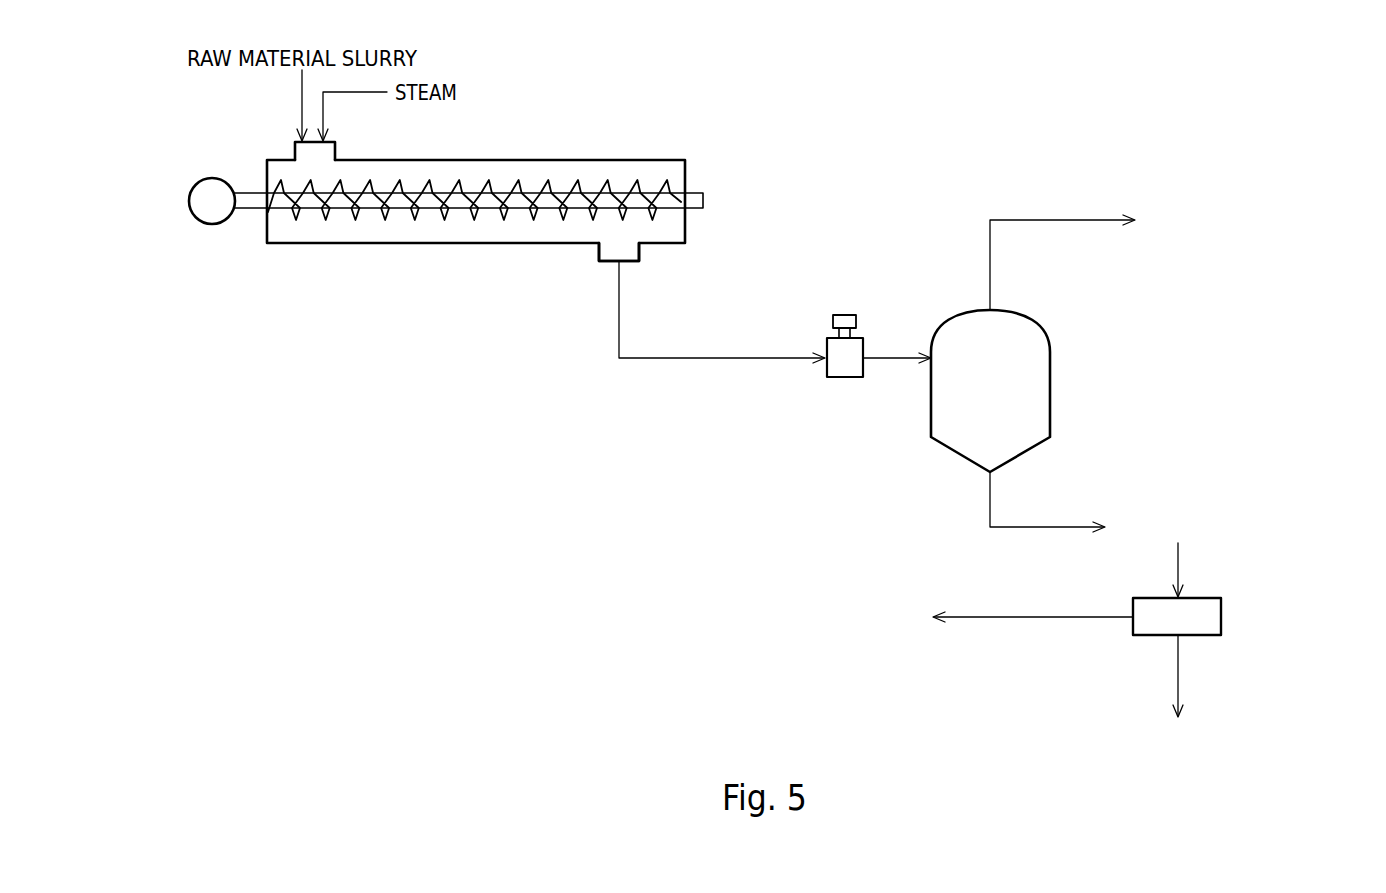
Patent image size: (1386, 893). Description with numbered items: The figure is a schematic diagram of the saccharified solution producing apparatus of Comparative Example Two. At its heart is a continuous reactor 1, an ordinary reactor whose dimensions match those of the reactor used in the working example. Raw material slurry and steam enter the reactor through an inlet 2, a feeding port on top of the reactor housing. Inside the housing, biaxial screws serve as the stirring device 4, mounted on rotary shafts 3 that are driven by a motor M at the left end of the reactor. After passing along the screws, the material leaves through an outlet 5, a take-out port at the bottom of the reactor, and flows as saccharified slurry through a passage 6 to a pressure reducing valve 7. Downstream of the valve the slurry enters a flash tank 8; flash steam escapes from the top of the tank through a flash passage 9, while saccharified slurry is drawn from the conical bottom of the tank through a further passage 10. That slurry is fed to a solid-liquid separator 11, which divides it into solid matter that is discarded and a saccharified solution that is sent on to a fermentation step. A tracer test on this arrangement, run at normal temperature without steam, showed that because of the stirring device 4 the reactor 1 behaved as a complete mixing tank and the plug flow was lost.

The continuous reactor 1 is at (600, 159).
The inlet of continuous reactor 2 is at (337, 150).
The rotary shaft 3 is at (251, 210).
The stirring device 4 is at (383, 227).
The outlet of continuous reactor 5 is at (607, 262).
The passage 6 is at (670, 360).
The pressure reducing valve 7 is at (843, 378).
The flash tank 8 is at (1030, 313).
The flash passage 9 is at (1047, 219).
The passage 10 is at (992, 497).
The solid-liquid separator 11 is at (1222, 617).